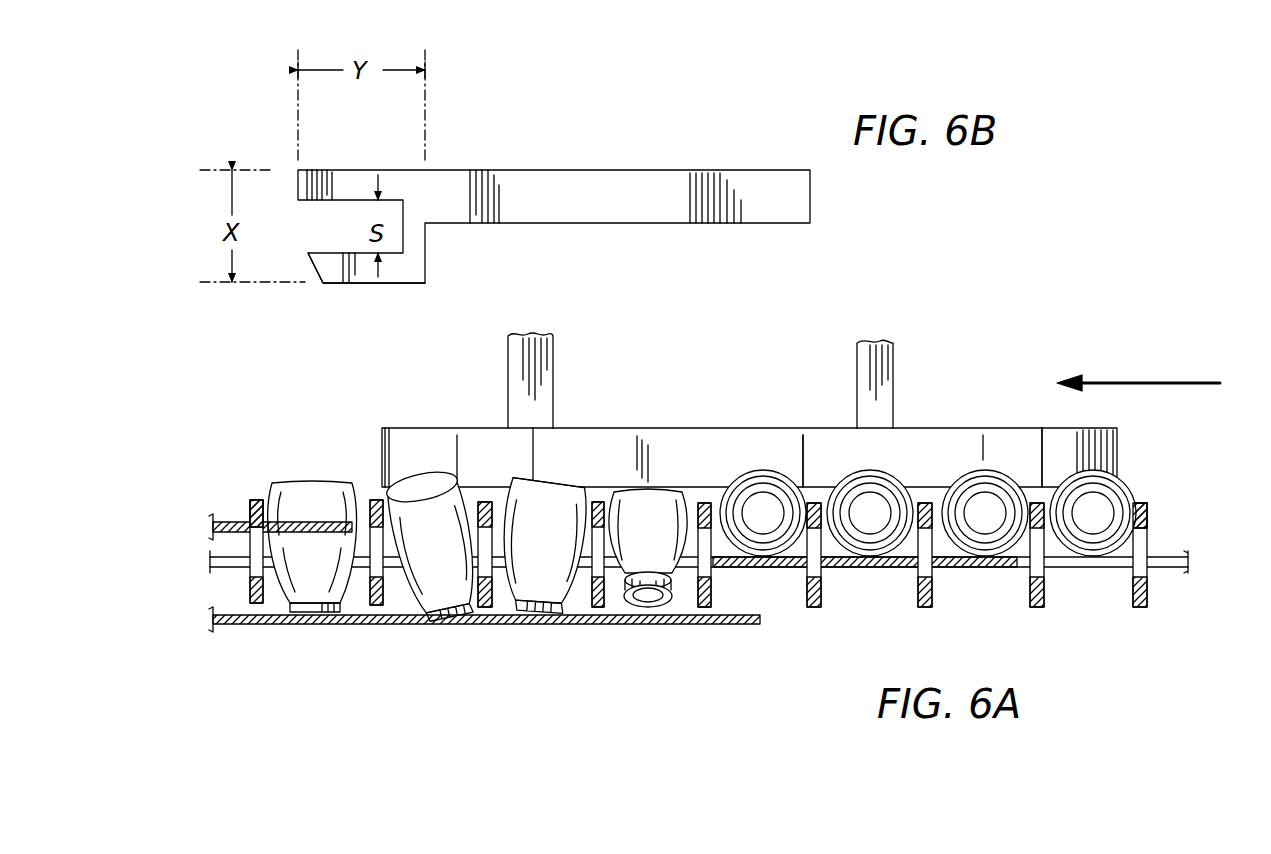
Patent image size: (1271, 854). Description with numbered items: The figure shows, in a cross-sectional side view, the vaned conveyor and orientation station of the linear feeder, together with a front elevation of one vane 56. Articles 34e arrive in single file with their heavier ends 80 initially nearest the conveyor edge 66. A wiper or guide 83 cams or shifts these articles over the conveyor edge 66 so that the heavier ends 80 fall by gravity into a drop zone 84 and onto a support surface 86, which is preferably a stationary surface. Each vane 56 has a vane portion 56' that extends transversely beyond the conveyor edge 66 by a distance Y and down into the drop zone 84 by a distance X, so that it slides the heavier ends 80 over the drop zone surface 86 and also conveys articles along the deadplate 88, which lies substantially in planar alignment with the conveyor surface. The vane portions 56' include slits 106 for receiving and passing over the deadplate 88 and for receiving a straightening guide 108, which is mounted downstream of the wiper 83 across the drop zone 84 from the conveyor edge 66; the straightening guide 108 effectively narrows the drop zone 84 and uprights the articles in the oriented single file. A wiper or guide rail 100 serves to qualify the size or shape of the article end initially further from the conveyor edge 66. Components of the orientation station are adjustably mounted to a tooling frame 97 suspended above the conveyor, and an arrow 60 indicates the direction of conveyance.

In FIG. 6B, the vane 56 is at (554, 205).
In FIG. 6B, the vane portion 56' is at (335, 165).
In FIG. 6A, the vane portion 56' is at (709, 489).
In FIG. 6B, the slit 106 is at (322, 228).
In FIG. 6A, the slit 106 is at (247, 512).
In FIG. 6A, the straightening guide 108 is at (313, 520).
In FIG. 6A, the wiper or guide 83 is at (473, 447).
In FIG. 6A, the tooling frame 97 is at (540, 383).
In FIG. 6A, the conveyor edge 66 is at (718, 487).
In FIG. 6A, the articles 34e is at (843, 487).
In FIG. 6A, the wiper or guide rail 100 is at (927, 450).
In FIG. 6A, the direction of travel 60 is at (1143, 382).
In FIG. 6A, the heavier end 80 is at (530, 577).
In FIG. 6A, the support surface 86 is at (570, 603).
In FIG. 6A, the drop zone 84 is at (683, 592).
In FIG. 6A, the deadplate 88 is at (867, 568).